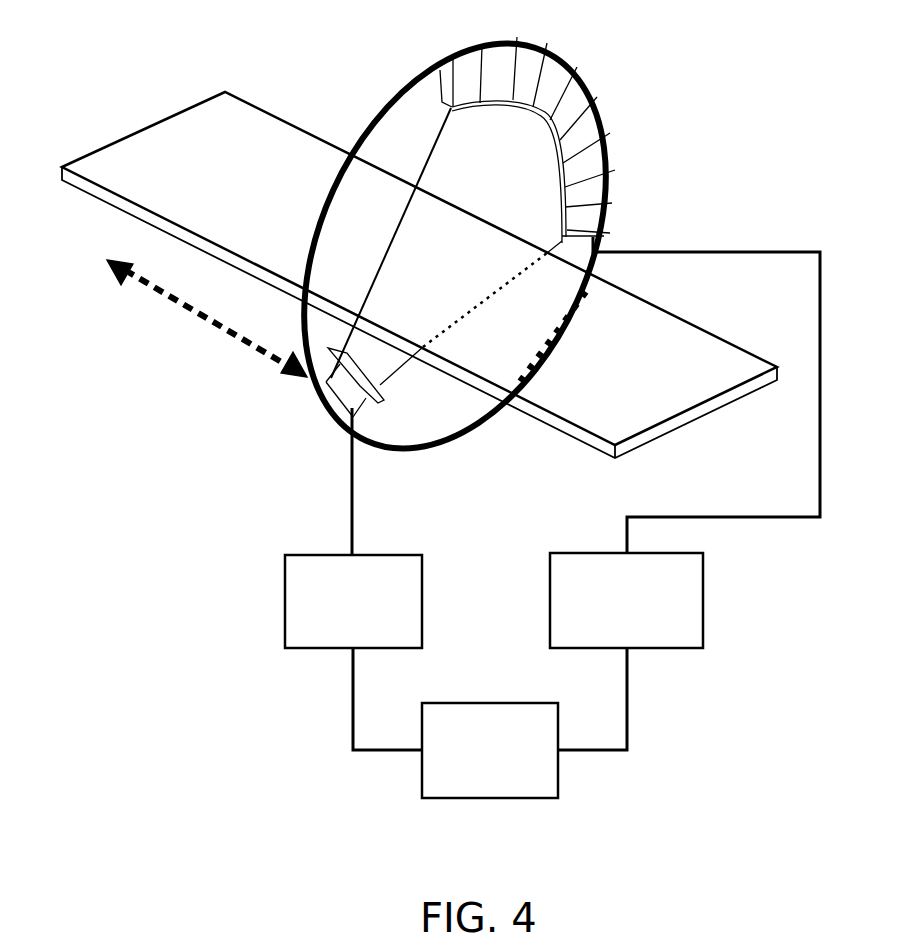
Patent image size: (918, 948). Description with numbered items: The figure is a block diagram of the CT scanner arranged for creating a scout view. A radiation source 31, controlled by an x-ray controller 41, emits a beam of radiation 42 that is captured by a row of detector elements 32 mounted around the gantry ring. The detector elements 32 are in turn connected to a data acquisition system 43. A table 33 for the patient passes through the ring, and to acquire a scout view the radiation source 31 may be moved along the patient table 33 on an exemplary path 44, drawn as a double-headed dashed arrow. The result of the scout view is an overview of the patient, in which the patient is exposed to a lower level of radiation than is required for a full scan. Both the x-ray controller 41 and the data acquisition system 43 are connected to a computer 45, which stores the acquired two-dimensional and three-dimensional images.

The radiation source 31 is at (365, 402).
The row of detector elements 32 is at (440, 92).
The table 33 is at (157, 123).
The x-ray controller 41 is at (285, 597).
The beam of radiation 42 is at (425, 163).
The data acquisition system 43 is at (703, 607).
The path 44 is at (220, 327).
The computer 45 is at (558, 778).